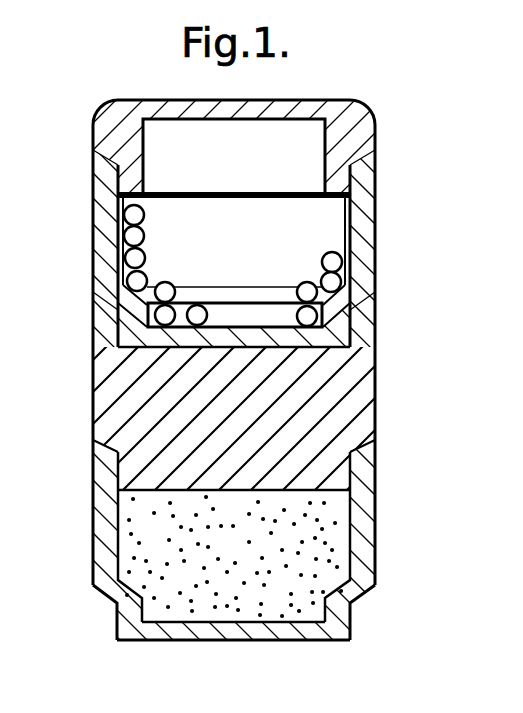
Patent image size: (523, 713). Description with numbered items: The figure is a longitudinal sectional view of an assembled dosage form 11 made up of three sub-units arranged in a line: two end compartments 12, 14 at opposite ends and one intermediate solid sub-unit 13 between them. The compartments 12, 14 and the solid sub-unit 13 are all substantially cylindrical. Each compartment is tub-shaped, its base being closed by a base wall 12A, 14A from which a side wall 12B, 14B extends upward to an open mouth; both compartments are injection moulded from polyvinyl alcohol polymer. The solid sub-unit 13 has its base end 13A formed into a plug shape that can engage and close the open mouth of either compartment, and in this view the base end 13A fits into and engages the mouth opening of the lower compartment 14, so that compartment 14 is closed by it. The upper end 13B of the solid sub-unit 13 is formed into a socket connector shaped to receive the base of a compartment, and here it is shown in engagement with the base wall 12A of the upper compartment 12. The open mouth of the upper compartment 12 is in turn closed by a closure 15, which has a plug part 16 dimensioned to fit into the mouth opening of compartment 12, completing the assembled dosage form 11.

The dosage form 11 is at (93, 612).
The compartment 12 is at (125, 245).
The base wall 12A is at (334, 291).
The side wall 12B is at (355, 226).
The solid sub-unit 13 is at (120, 400).
The base end 13A is at (320, 491).
The upper end 13B is at (352, 337).
The compartment 14 is at (138, 533).
The base wall 14A is at (305, 641).
The side wall 14B is at (367, 572).
The closure 15 is at (358, 117).
The plug part 16 is at (345, 184).